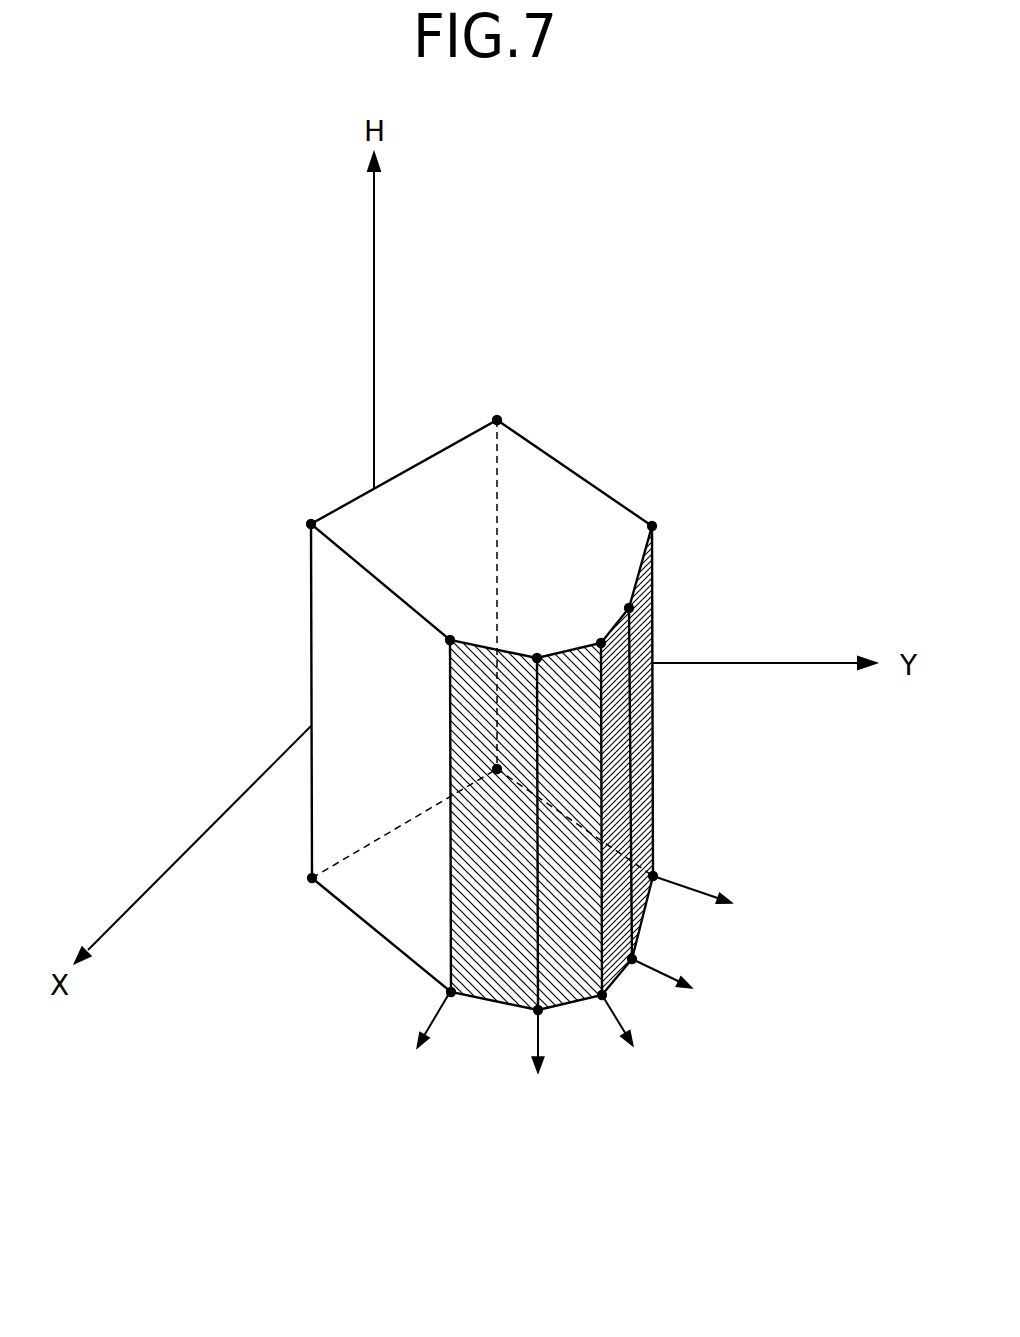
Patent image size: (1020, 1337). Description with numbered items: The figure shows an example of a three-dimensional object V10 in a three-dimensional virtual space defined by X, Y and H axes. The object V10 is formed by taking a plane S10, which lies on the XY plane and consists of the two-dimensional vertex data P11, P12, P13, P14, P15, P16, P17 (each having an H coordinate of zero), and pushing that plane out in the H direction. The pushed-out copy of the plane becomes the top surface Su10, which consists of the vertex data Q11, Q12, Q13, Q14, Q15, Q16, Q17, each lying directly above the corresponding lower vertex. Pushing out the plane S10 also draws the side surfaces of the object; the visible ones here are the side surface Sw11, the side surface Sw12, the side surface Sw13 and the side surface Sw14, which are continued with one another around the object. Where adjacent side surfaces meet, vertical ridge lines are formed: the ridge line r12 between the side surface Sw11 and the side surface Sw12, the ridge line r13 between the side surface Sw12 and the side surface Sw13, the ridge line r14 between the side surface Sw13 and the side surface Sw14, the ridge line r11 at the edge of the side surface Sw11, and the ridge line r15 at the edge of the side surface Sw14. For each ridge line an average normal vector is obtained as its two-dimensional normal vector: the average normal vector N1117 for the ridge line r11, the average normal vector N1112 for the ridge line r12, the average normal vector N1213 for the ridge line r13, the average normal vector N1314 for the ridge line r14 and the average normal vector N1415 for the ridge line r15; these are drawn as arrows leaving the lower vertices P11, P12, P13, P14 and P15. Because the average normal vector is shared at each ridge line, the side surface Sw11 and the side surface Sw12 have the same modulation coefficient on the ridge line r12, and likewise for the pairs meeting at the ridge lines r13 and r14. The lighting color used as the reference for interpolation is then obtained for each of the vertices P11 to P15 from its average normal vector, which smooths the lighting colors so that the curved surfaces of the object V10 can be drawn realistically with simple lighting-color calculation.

The three-dimensional object V10 is at (229, 395).
The top surface Su10 is at (561, 510).
The plane S10 is at (381, 895).
The vertex data Q11 is at (686, 525).
The vertex data Q12 is at (629, 608).
The vertex data Q13 is at (601, 643).
The vertex data Q14 is at (537, 641).
The vertex data Q15 is at (460, 623).
The vertex data Q16 is at (278, 523).
The vertex data Q17 is at (497, 402).
The vertex data P11 is at (684, 867).
The vertex data P12 is at (663, 950).
The vertex data P13 is at (635, 1004).
The vertex data P14 is at (510, 1027).
The vertex data P15 is at (412, 1006).
The vertex data P16 is at (286, 899).
The vertex data P17 is at (496, 768).
The ridge line r11 is at (653, 561).
The ridge line r12 is at (629, 718).
The ridge line r13 is at (571, 647).
The ridge line r14 is at (565, 1003).
The ridge line r15 is at (450, 848).
The side surface Sw11 is at (640, 767).
The side surface Sw12 is at (613, 800).
The side surface Sw13 is at (587, 1000).
The side surface Sw14 is at (476, 987).
The average normal vector N1117 is at (742, 900).
The average normal vector N1112 is at (711, 988).
The average normal vector N1213 is at (665, 1033).
The average normal vector N1314 is at (526, 1062).
The average normal vector N1415 is at (388, 1038).